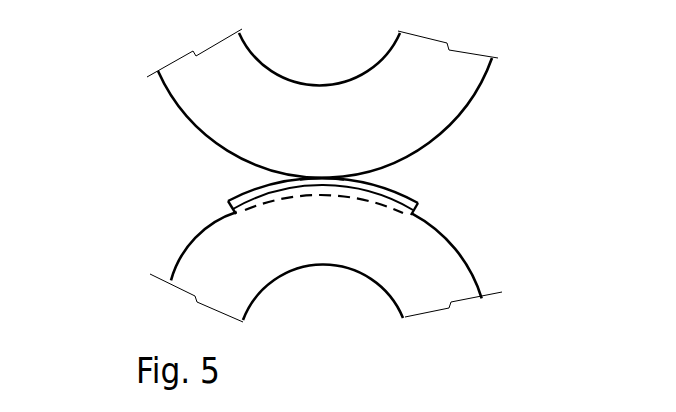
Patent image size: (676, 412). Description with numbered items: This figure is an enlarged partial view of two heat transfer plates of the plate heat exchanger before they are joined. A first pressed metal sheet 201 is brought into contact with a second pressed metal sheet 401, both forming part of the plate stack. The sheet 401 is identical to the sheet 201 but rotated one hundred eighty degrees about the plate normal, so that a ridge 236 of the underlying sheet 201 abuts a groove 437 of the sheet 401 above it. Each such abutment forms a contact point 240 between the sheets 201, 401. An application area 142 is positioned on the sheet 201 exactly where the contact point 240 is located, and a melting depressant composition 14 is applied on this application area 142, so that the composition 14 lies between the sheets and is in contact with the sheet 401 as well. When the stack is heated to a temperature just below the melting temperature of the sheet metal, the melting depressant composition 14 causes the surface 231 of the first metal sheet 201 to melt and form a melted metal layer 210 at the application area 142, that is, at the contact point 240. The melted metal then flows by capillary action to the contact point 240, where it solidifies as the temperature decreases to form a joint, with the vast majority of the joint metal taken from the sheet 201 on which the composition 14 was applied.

The melting depressant composition 14 is at (319, 112).
The application area 142 is at (224, 181).
The metal sheet 201 is at (323, 240).
The melted metal layer 210 is at (414, 206).
The surface 231 is at (428, 218).
The ridge 236 is at (171, 248).
The contact point 240 is at (321, 163).
The metal sheet 401 is at (306, 103).
The groove 437 is at (144, 104).